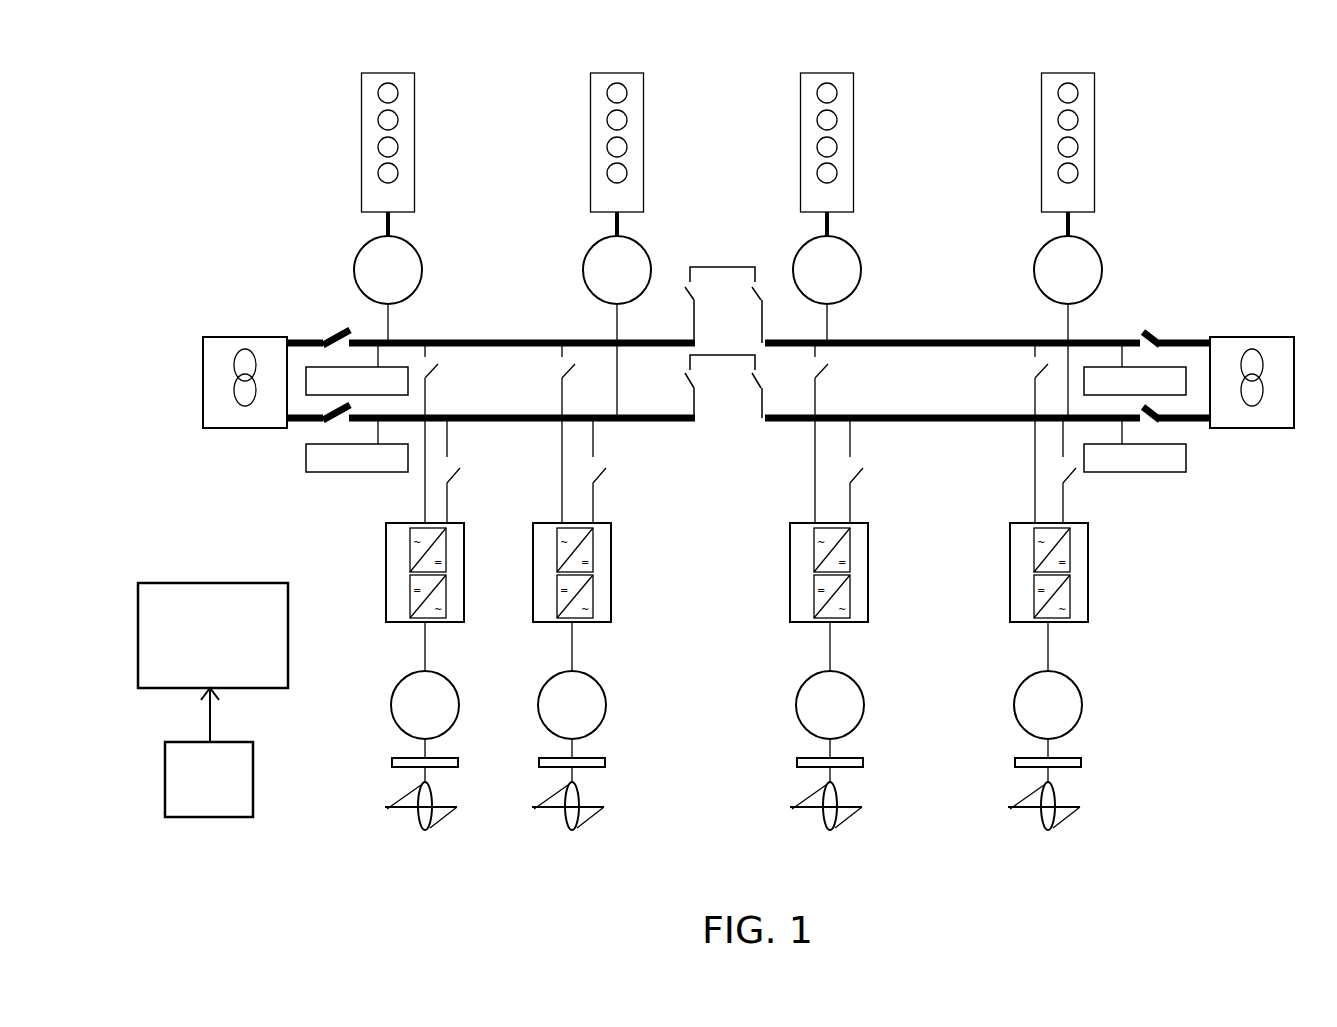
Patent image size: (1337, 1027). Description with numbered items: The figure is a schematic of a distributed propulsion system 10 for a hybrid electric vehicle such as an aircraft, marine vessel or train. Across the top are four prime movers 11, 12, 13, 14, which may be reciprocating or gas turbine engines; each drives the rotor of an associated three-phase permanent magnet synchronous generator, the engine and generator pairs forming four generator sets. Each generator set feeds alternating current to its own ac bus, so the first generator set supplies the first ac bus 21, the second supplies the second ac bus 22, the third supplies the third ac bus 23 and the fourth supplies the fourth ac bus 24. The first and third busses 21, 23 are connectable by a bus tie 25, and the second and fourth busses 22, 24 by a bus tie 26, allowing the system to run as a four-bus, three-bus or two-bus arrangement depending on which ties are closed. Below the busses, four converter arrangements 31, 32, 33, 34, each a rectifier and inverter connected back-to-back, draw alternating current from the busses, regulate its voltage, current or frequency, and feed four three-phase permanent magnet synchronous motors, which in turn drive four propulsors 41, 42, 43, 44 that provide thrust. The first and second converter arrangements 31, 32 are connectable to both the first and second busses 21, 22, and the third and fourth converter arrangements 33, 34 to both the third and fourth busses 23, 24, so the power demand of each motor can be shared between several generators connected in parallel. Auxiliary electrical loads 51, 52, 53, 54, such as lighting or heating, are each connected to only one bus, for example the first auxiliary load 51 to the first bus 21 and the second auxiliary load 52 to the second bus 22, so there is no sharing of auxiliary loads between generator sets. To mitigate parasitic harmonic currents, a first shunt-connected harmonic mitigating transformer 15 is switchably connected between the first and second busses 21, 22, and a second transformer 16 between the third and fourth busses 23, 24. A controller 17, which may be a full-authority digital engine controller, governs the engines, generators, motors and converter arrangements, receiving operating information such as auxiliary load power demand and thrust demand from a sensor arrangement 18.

The distributed propulsion system 10 is at (245, 144).
The first prime mover 11 is at (400, 73).
The second prime mover 12 is at (629, 73).
The third prime mover 13 is at (837, 73).
The fourth prime mover 14 is at (1078, 73).
The first shunt-connected harmonic mitigating transformer 15 is at (203, 337).
The second transformer 16 is at (1268, 338).
The controller 17 is at (213, 635).
The sensor arrangement 18 is at (209, 752).
The first ac bus 21 is at (485, 343).
The second ac bus 22 is at (653, 421).
The third ac bus 23 is at (920, 343).
The fourth ac bus 24 is at (927, 423).
The bus tie 25 is at (723, 267).
The bus tie 26 is at (713, 358).
The first converter arrangement 31 is at (386, 553).
The second converter arrangement 32 is at (611, 573).
The third converter arrangement 33 is at (869, 573).
The fourth converter arrangement 34 is at (1087, 573).
The first propulsor 41 is at (400, 808).
The second propulsor 42 is at (547, 808).
The third propulsor 43 is at (862, 808).
The fourth propulsor 44 is at (1080, 808).
The first auxiliary electrical load 51 is at (328, 367).
The second auxiliary electrical load 52 is at (305, 460).
The third auxiliary electrical load 53 is at (1153, 367).
The fourth auxiliary electrical load 54 is at (1185, 465).